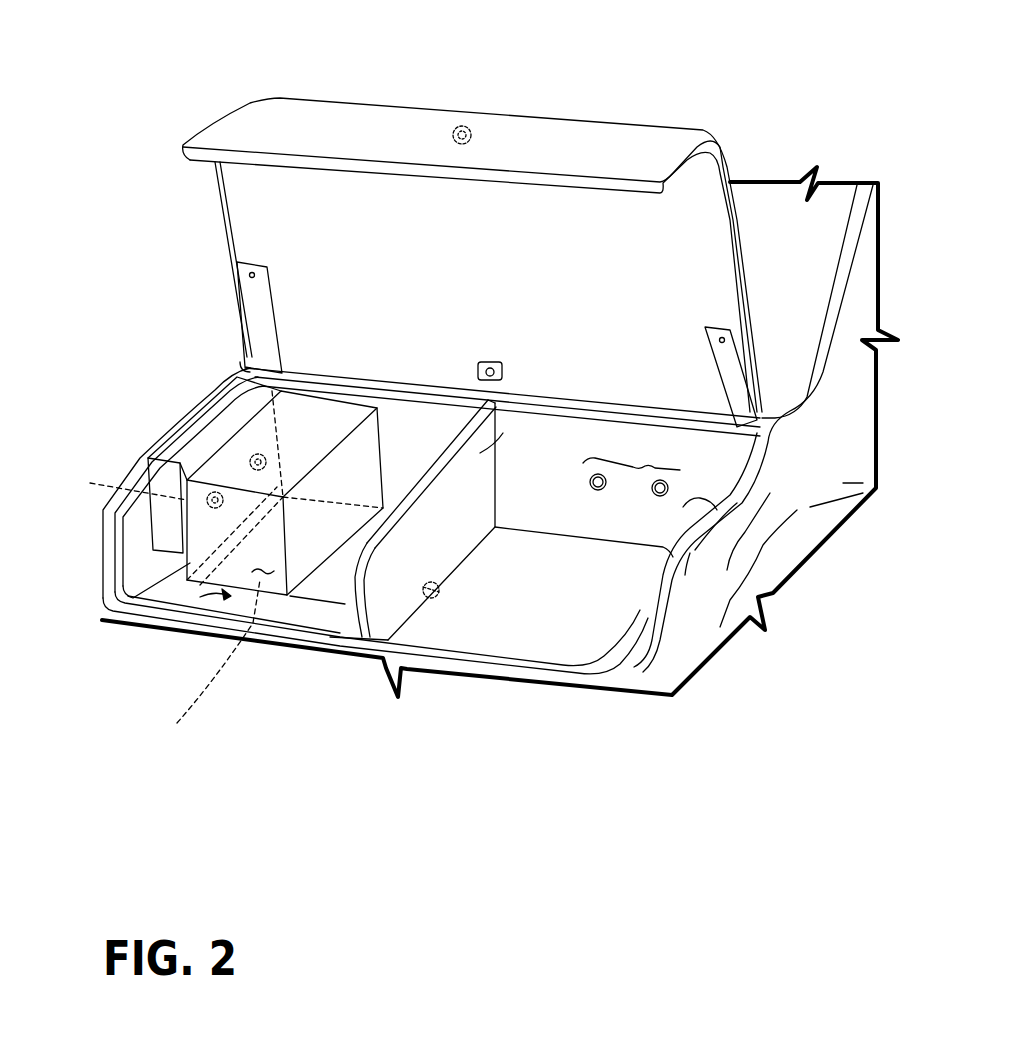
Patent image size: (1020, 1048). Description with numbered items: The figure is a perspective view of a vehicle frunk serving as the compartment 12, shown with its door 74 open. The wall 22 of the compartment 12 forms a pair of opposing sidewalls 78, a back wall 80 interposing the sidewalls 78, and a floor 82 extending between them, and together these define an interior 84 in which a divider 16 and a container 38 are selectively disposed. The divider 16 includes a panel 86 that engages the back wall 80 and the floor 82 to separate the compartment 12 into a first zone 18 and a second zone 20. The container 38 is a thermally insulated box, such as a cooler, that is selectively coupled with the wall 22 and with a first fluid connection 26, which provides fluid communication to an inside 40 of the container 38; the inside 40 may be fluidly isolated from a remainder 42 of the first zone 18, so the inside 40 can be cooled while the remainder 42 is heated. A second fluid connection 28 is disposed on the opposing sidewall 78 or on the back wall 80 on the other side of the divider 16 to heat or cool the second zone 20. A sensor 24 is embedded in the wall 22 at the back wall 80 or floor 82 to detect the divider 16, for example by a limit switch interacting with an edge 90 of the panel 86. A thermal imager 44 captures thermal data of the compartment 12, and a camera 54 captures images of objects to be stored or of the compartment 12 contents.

The compartment 12 is at (612, 619).
The divider 16 is at (460, 420).
The first zone 18 is at (234, 614).
The second zone 20 is at (584, 586).
The wall 22 is at (143, 453).
The sensor 24 is at (440, 603).
The first fluid connection 26 is at (236, 472).
The second fluid connection 28 is at (631, 463).
The container 38 is at (283, 590).
The inside 40 is at (218, 664).
The remainder 42 is at (353, 637).
The thermal imager 44 is at (468, 117).
The camera 54 is at (490, 362).
The door 74 is at (212, 118).
The sidewalls 78 is at (133, 527).
The back wall 80 is at (313, 380).
The floor 82 is at (200, 597).
The interior 84 is at (446, 416).
The panel 86 is at (480, 453).
The edge 90 is at (343, 600).